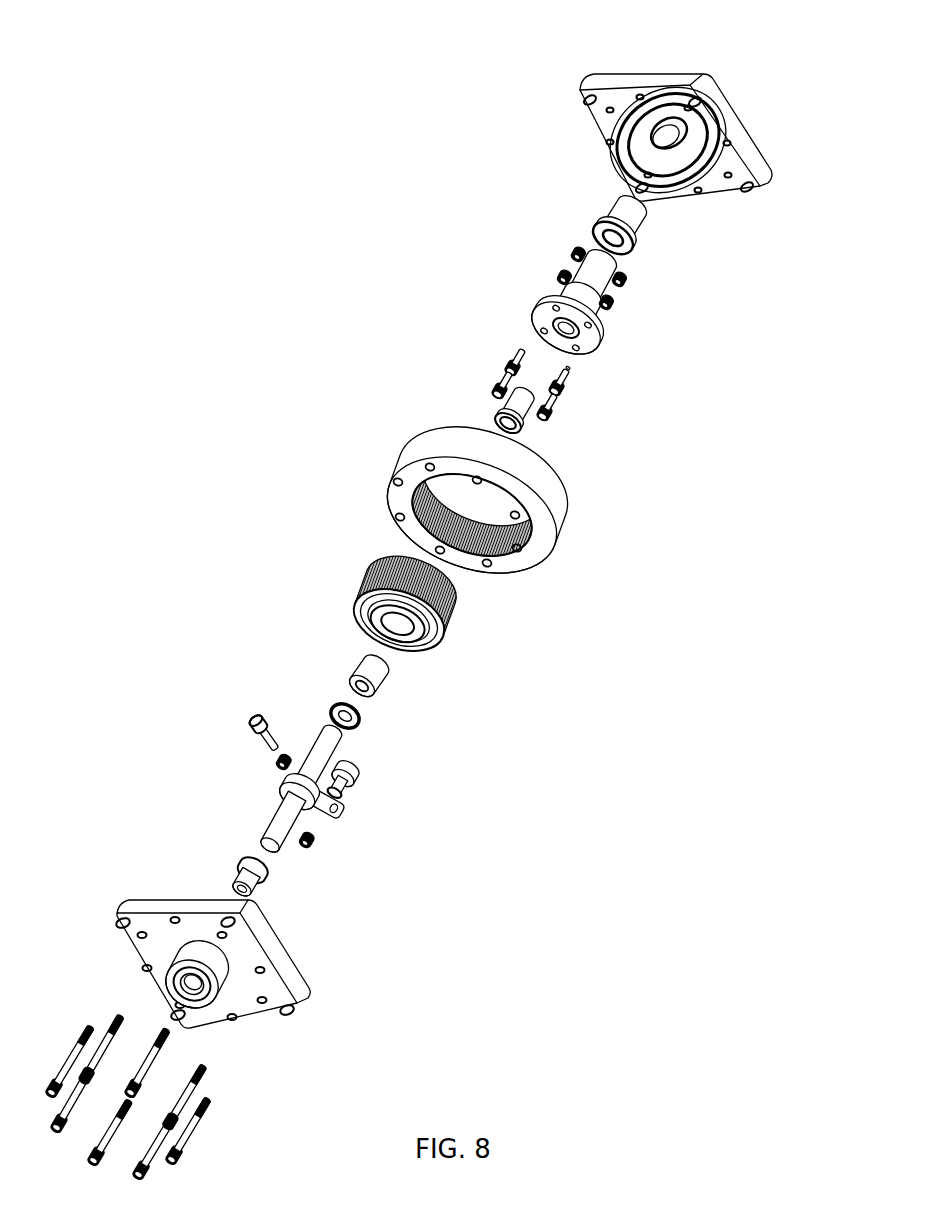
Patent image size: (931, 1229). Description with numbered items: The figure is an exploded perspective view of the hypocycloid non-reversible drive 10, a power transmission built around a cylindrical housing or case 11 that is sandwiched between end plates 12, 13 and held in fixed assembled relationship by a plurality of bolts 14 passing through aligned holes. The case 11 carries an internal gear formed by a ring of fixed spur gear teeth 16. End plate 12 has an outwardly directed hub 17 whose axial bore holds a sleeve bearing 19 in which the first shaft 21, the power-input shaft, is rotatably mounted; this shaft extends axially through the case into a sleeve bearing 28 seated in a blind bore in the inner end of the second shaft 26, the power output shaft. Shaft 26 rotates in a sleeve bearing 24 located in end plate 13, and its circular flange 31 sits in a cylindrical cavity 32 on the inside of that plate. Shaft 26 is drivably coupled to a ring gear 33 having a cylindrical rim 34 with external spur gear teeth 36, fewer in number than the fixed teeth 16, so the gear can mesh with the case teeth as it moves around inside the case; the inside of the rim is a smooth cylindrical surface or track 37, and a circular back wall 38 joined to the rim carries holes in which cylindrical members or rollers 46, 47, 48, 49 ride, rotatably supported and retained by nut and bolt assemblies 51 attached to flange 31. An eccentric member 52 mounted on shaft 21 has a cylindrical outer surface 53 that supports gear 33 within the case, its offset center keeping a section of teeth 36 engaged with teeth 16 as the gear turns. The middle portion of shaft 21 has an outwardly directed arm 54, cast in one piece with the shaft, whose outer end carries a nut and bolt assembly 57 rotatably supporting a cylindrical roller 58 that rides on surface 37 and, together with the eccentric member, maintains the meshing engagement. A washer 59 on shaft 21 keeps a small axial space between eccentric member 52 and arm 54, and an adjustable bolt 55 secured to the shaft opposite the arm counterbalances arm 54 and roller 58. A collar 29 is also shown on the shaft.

The hypocycloid non-reversible drive 10 is at (432, 106).
The cylindrical housing or case 11 is at (525, 487).
The end plate 12 is at (167, 903).
The end plate 13 is at (752, 192).
The bolts 14 is at (105, 1037).
The fixed spur gear teeth 16 is at (383, 488).
The hub 17 is at (117, 904).
The sleeve bearing 19 is at (253, 872).
The first shaft 21 is at (465, 830).
The sleeve bearing 24 is at (618, 213).
The second shaft 26 is at (597, 267).
The sleeve bearing 28 is at (527, 410).
The collar 29 is at (333, 740).
The circular flange 31 is at (530, 295).
The cylindrical cavity 32 is at (700, 150).
The ring gear 33 is at (357, 598).
The cylindrical rim 34 is at (326, 574).
The external spur gear teeth 36 is at (432, 653).
The cylindrical surface or track 37 is at (397, 628).
The circular back wall 38 is at (368, 588).
The cylindrical member or roller 46 is at (507, 357).
The cylindrical member or roller 47 is at (557, 388).
The cylindrical member or roller 48 is at (546, 410).
The cylindrical member or roller 49 is at (493, 387).
The nut and bolt assemblies 51 is at (565, 370).
The eccentric member 52 is at (385, 700).
The cylindrical outer surface 53 is at (400, 678).
The arm 54 is at (328, 825).
The adjustable bolt 55 is at (262, 732).
The nut and bolt assembly 57 is at (339, 795).
The cylindrical roller 58 is at (355, 782).
The washer 59 is at (360, 727).